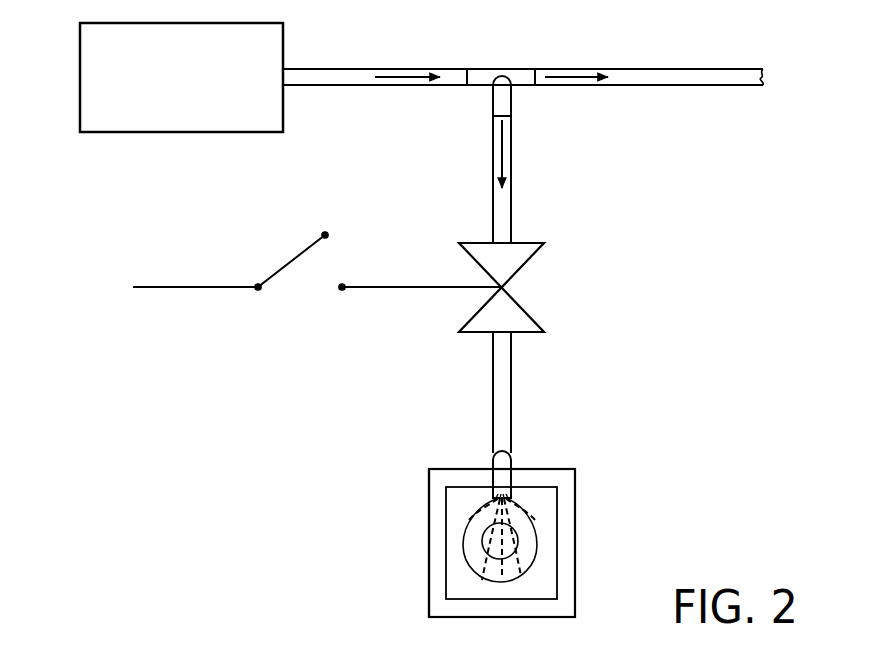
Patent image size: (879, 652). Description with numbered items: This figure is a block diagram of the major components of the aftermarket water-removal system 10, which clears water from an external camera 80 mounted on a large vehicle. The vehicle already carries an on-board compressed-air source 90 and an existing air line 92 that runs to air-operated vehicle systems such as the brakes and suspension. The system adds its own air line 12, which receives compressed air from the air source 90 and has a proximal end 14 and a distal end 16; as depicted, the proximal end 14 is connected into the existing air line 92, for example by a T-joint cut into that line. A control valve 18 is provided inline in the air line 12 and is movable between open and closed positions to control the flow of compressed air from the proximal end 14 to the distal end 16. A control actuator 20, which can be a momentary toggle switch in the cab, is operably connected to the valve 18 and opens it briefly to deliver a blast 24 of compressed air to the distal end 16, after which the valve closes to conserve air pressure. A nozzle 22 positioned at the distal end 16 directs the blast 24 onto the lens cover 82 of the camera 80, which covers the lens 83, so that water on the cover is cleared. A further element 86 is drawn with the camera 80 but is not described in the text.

The water-removal system 10 is at (292, 412).
The air line 12 is at (515, 200).
The proximal end 14 is at (512, 116).
The distal end 16 is at (512, 428).
The control valve 18 is at (529, 293).
The control actuator 20 is at (287, 308).
The nozzle 22 is at (525, 503).
The blast of compressed air 24 is at (520, 527).
The external camera 80 is at (413, 540).
The lens cover 82 is at (462, 507).
The lens 83 is at (524, 556).
The enclosure wall 86 is at (425, 588).
The compressed-air source 90 is at (188, 134).
The existing air line 92 is at (425, 89).